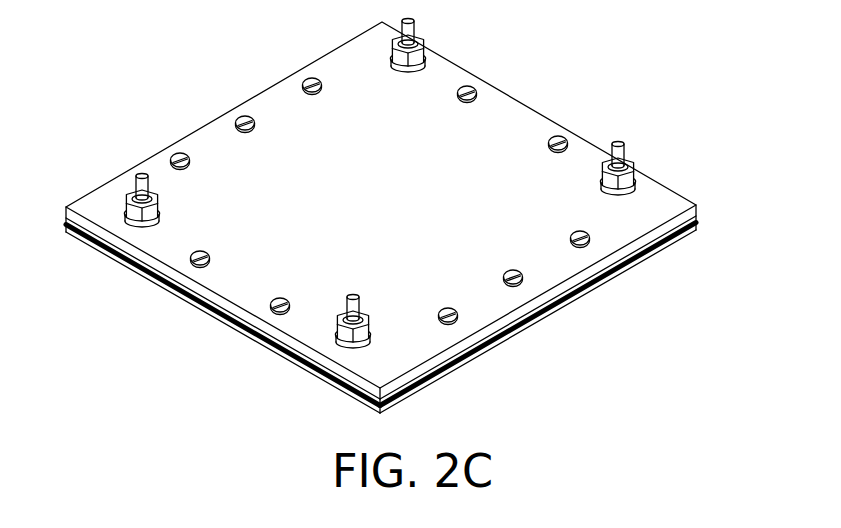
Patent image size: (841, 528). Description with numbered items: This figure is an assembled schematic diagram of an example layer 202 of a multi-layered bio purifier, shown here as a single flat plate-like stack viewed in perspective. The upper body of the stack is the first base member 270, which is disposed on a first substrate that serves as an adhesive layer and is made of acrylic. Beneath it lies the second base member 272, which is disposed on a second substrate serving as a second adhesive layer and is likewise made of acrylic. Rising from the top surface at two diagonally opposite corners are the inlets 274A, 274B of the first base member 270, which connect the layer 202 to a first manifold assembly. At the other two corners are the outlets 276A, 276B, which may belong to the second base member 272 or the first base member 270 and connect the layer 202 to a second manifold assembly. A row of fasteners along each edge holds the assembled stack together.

The layer 202 is at (582, 385).
The first base member 270 is at (673, 191).
The second base member 272 is at (660, 247).
The inlet 274A is at (425, 46).
The inlet 274B is at (633, 159).
The outlet 276A is at (124, 199).
The outlet 276B is at (338, 317).